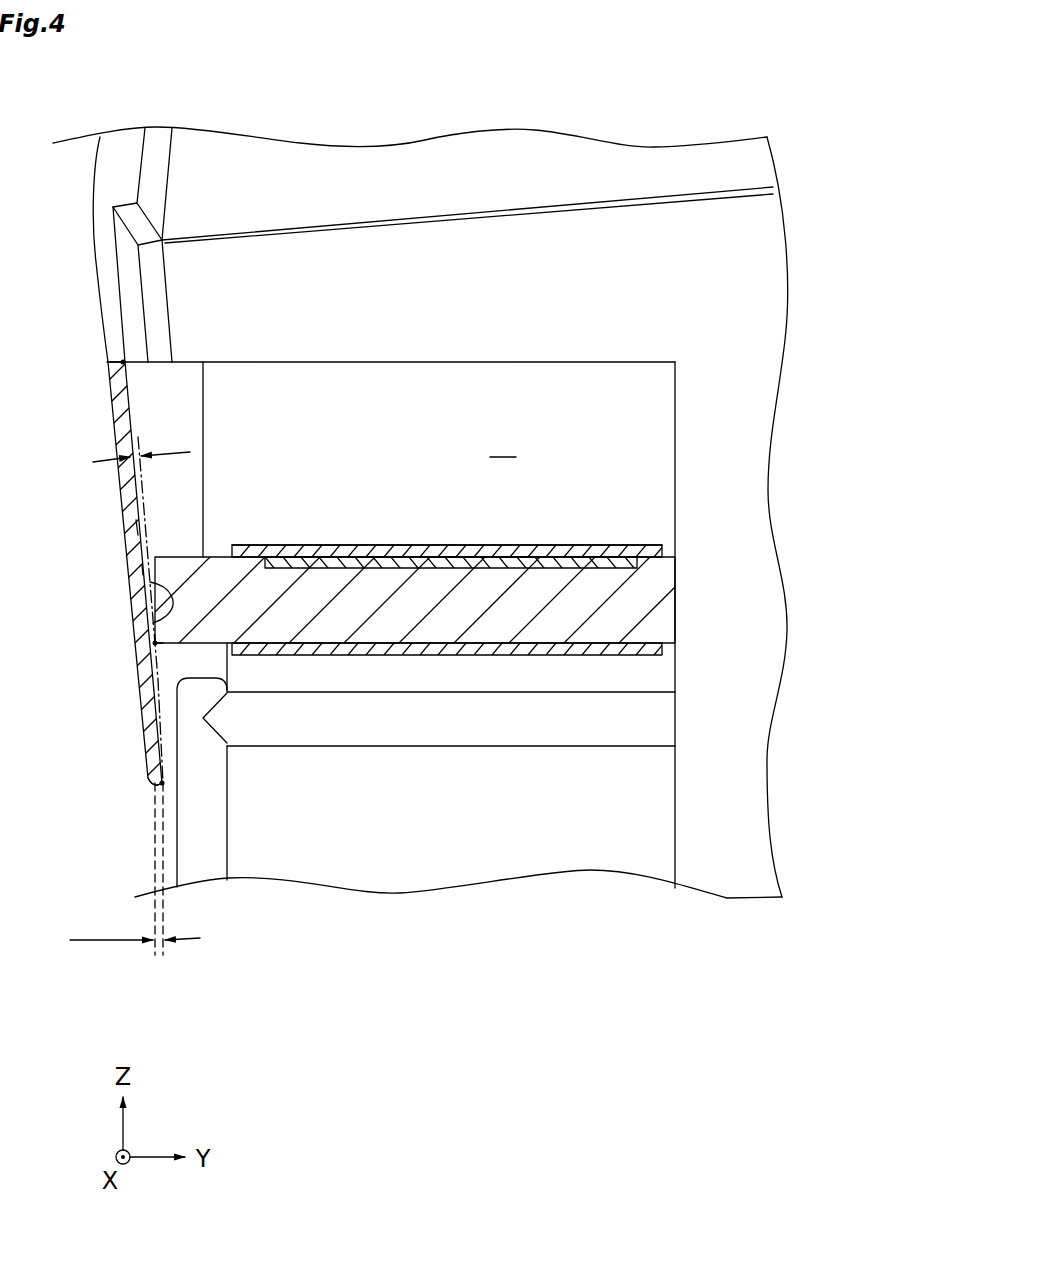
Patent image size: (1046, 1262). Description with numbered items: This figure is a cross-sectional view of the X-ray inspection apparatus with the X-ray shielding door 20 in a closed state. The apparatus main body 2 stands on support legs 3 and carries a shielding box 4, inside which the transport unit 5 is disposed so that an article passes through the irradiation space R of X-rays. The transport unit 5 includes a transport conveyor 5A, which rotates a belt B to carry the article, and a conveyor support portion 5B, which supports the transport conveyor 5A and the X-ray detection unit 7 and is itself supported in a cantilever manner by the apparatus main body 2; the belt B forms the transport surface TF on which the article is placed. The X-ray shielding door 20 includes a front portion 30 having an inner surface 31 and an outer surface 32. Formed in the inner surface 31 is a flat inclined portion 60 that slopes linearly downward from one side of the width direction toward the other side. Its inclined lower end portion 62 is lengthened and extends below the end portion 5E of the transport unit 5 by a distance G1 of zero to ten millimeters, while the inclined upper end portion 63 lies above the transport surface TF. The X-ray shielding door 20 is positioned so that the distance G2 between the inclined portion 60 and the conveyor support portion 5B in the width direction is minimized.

The apparatus main body 2 is at (517, 173).
The support legs 3 is at (212, 847).
The shielding box 4 is at (471, 585).
The transport unit 5 is at (472, 712).
The transport conveyor 5A is at (547, 605).
The conveyor support portion 5B is at (500, 608).
The end portion 5E is at (155, 643).
The X-ray detection unit 7 is at (567, 560).
The belt B is at (645, 547).
The X-ray shielding door 20 is at (101, 535).
The front portion 30 is at (128, 548).
The inner surface 31 is at (153, 622).
The outer surface 32 is at (143, 569).
The inclined portion 60 is at (143, 527).
The inclined lower end portion 62 is at (162, 783).
The inclined upper end portion 63 is at (123, 362).
The irradiation space R is at (503, 444).
The transport surface TF is at (348, 543).
The distance G1 is at (135, 869).
The distance G2 is at (141, 443).